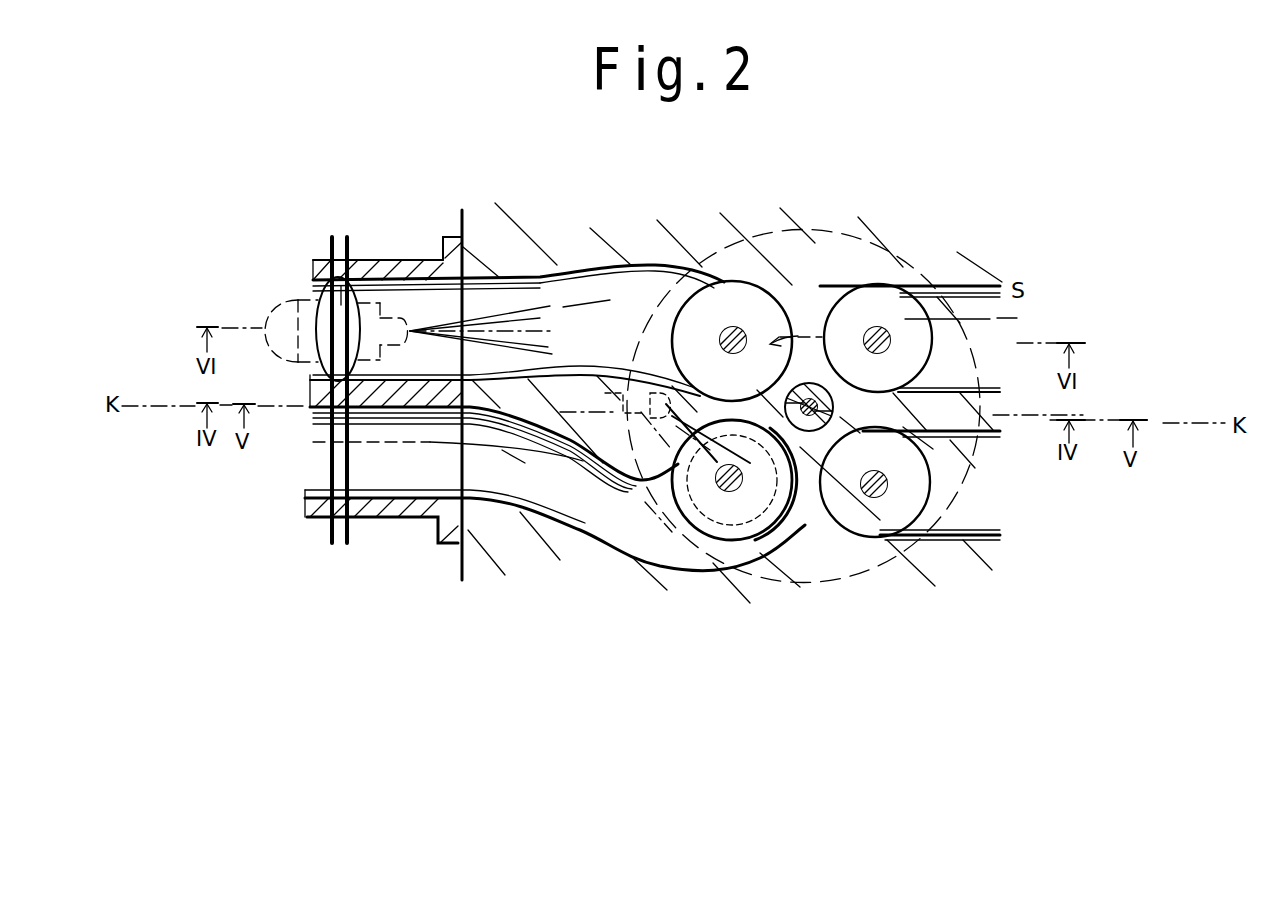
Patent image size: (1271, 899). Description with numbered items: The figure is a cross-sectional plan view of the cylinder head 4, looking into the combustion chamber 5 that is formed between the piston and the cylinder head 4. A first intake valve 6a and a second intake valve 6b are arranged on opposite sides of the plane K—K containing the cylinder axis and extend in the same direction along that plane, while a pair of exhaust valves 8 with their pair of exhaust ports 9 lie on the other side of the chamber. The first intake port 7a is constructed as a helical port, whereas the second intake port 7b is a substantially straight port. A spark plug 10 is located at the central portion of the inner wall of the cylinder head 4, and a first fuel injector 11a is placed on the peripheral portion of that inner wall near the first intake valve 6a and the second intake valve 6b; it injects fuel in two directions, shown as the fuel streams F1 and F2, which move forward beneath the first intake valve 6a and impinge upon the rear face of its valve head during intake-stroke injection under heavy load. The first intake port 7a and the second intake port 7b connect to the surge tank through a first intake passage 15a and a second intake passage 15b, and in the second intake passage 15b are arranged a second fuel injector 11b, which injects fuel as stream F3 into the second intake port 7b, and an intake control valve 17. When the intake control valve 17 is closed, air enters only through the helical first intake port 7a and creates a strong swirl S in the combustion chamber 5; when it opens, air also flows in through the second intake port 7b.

The cylinder head 4 is at (940, 262).
The combustion chamber 5 is at (787, 248).
The first intake valve 6a is at (740, 523).
The second intake valve 6b is at (742, 292).
The first intake port 7a is at (573, 514).
The second intake port 7b is at (563, 290).
The exhaust valves 8 is at (888, 305).
The exhaust ports 9 is at (980, 281).
The spark plug 10 is at (812, 383).
The first fuel injector 11a is at (626, 418).
The second fuel injector 11b is at (297, 300).
The first intake passage 15a is at (398, 487).
The second intake passage 15b is at (423, 283).
The intake control valve 17 is at (348, 288).
The fuel stream F1 is at (675, 520).
The fuel stream F2 is at (775, 525).
The fuel stream F3 is at (512, 320).